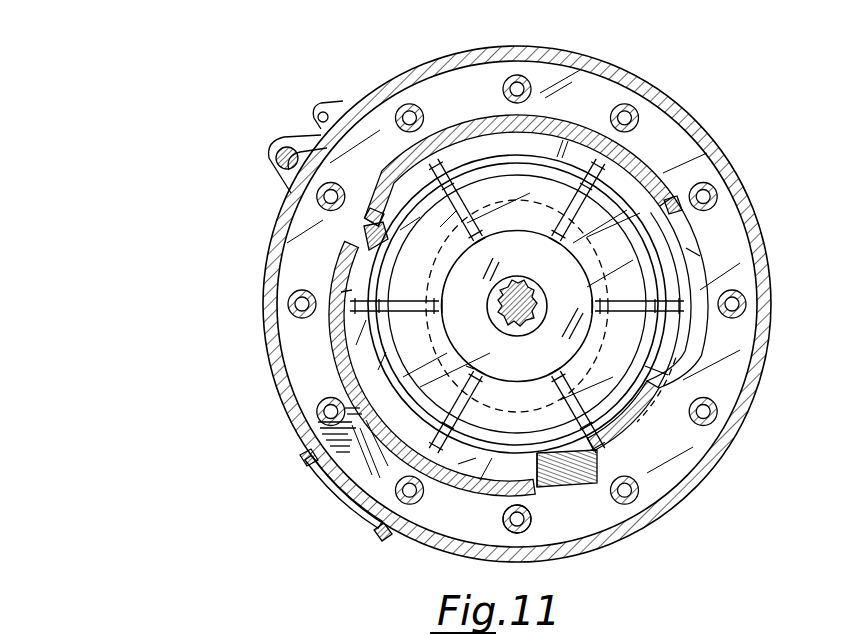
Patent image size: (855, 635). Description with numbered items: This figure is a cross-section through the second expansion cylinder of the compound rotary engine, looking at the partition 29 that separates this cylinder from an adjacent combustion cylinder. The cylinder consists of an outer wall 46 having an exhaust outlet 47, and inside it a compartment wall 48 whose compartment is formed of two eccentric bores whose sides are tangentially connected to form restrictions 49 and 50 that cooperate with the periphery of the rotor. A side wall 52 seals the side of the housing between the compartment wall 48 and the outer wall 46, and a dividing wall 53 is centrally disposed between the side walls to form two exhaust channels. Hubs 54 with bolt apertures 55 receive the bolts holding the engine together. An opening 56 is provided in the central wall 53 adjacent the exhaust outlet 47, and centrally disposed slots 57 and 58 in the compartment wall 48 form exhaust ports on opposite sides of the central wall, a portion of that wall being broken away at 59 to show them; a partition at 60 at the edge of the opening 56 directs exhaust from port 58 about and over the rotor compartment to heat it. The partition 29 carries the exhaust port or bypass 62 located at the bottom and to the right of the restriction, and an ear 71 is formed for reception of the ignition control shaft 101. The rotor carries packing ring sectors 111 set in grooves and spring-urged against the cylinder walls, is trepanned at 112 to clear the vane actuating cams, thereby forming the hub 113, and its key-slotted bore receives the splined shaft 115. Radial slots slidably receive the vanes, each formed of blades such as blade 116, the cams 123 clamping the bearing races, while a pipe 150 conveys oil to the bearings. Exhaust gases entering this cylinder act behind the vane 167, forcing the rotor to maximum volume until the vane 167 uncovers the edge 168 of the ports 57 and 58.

The partition 29 is at (472, 470).
The outer wall 46 is at (723, 156).
The exhaust outlet 47 is at (337, 493).
The compartment wall 48 is at (633, 154).
The restriction 49 is at (381, 220).
The restriction 50 is at (677, 363).
The side wall 52 is at (365, 241).
The dividing wall 53 is at (751, 254).
The hub 54 is at (531, 521).
The bolt aperture 55 is at (503, 521).
The opening 56 is at (325, 443).
The slot 57 is at (689, 251).
The slot 58 is at (338, 318).
The broken-away portion 59 is at (343, 271).
The partition 60 is at (311, 425).
The exhaust port 62 is at (624, 431).
The ear 71 is at (283, 184).
The ignition control shaft 101 is at (286, 158).
The packing ring sector 111 is at (390, 270).
The trepanned portion 112 is at (570, 338).
The hub 113 is at (493, 315).
The splined shaft 115 is at (518, 326).
The blade 116 is at (470, 367).
The cam 123 is at (517, 315).
The pipe 150 is at (320, 114).
The vane 167 is at (446, 160).
The edge 168 is at (681, 208).